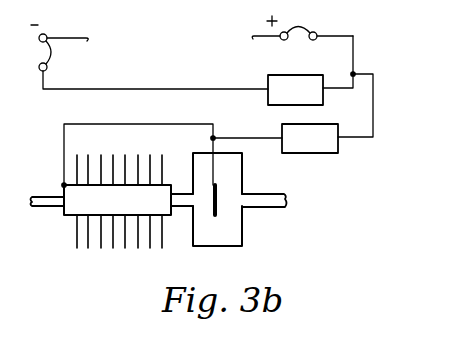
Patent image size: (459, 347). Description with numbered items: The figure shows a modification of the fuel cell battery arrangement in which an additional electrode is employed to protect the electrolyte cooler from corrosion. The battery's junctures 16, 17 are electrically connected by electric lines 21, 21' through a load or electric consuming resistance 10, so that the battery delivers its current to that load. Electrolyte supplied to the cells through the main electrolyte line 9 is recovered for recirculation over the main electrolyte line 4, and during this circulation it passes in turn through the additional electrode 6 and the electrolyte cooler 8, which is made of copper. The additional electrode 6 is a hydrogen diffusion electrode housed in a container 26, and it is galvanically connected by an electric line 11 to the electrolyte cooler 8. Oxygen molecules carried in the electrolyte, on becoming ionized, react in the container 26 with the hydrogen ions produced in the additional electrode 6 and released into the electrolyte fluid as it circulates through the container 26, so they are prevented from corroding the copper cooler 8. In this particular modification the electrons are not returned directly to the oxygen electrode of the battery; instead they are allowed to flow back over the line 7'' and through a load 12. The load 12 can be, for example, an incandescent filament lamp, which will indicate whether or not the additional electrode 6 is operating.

The juncture 17 is at (37, 42).
The juncture 16 is at (283, 41).
The electric line 21 is at (362, 62).
The electric line 21' is at (155, 92).
The line 7'' is at (378, 105).
The load or electric consuming resistance 10 is at (312, 105).
The load 12 is at (328, 153).
The electric line 11 is at (118, 118).
The main electrolyte line 9 is at (44, 209).
The electrolyte cooler 8 is at (77, 245).
The container 26 is at (230, 246).
The additional electrode 6 is at (215, 215).
The main electrolyte line 4 is at (268, 207).